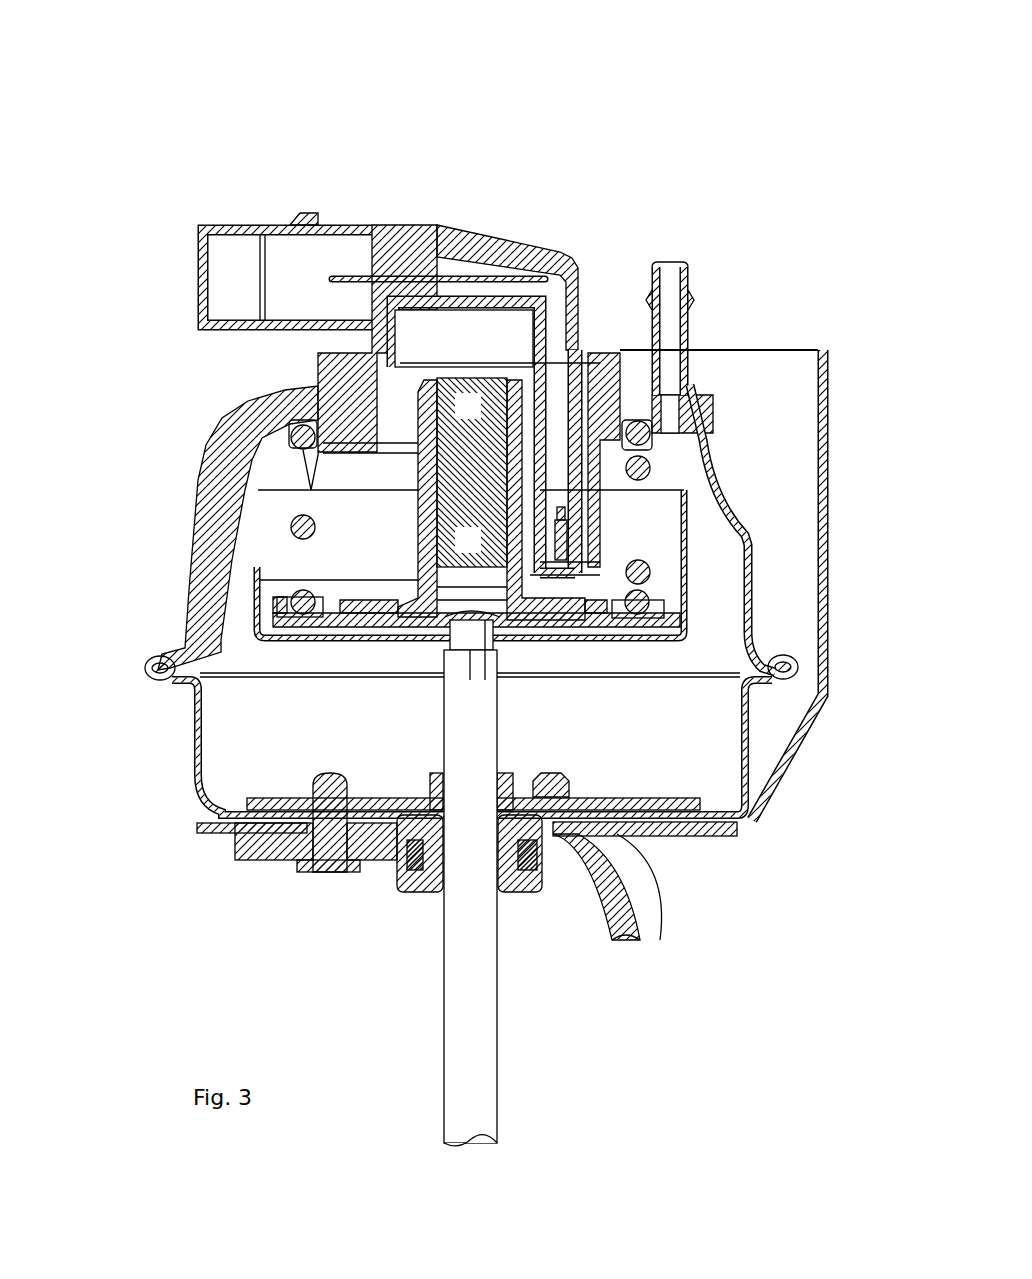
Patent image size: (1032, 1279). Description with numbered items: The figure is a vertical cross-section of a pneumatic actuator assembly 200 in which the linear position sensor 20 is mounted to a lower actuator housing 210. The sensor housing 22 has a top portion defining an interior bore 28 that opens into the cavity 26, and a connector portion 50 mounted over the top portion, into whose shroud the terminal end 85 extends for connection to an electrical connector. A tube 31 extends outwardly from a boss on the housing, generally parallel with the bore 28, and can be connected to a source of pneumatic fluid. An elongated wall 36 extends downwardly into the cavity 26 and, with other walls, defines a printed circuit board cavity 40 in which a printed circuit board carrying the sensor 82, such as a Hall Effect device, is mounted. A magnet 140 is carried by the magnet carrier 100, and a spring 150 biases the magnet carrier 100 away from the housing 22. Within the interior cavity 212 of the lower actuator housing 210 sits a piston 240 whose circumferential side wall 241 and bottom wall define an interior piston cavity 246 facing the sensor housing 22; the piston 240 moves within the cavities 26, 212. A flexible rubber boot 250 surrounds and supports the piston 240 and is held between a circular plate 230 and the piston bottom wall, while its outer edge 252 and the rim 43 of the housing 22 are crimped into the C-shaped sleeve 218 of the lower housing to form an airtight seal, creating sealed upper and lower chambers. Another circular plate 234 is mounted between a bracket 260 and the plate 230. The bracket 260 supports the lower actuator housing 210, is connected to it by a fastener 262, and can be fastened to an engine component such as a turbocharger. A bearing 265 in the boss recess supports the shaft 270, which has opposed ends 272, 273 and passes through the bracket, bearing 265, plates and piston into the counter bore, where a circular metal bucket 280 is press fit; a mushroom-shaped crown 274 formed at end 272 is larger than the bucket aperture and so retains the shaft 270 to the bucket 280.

The pneumatic actuator assembly 200 is at (252, 105).
The terminal end 85 is at (350, 250).
The connector portion 50 is at (404, 222).
The interior bore 28 is at (487, 354).
The linear position sensor assembly 20 is at (545, 255).
The tube 31 is at (690, 283).
The magnet 140 is at (445, 440).
The housing 22 is at (203, 445).
The circumferential side wall 241 is at (252, 492).
The cavity 26 is at (680, 476).
The spring 150 is at (648, 468).
The elongated wall 36 is at (590, 505).
The printed circuit board cavity 40 is at (565, 532).
The sensor 82 is at (548, 575).
The interior piston cavity 246 is at (290, 560).
The magnet carrier 100 is at (406, 578).
The piston 240 is at (245, 613).
The flexible rubber boot 250 is at (702, 550).
The rim 43 is at (162, 650).
The sleeve 218 is at (146, 666).
The interior cavity 212 is at (232, 718).
The lower actuator housing 210 is at (192, 740).
The shaft end 272 is at (467, 700).
The circular plate 230 is at (608, 650).
The outer edge 252 is at (782, 676).
The bucket 280 is at (500, 640).
The crown 274 is at (473, 652).
The circular plate 234 is at (688, 810).
The bracket 260 is at (214, 834).
The fastener 262 is at (327, 872).
The bearing 265 is at (423, 893).
The shaft 270 is at (443, 1017).
The shaft end 273 is at (498, 1115).